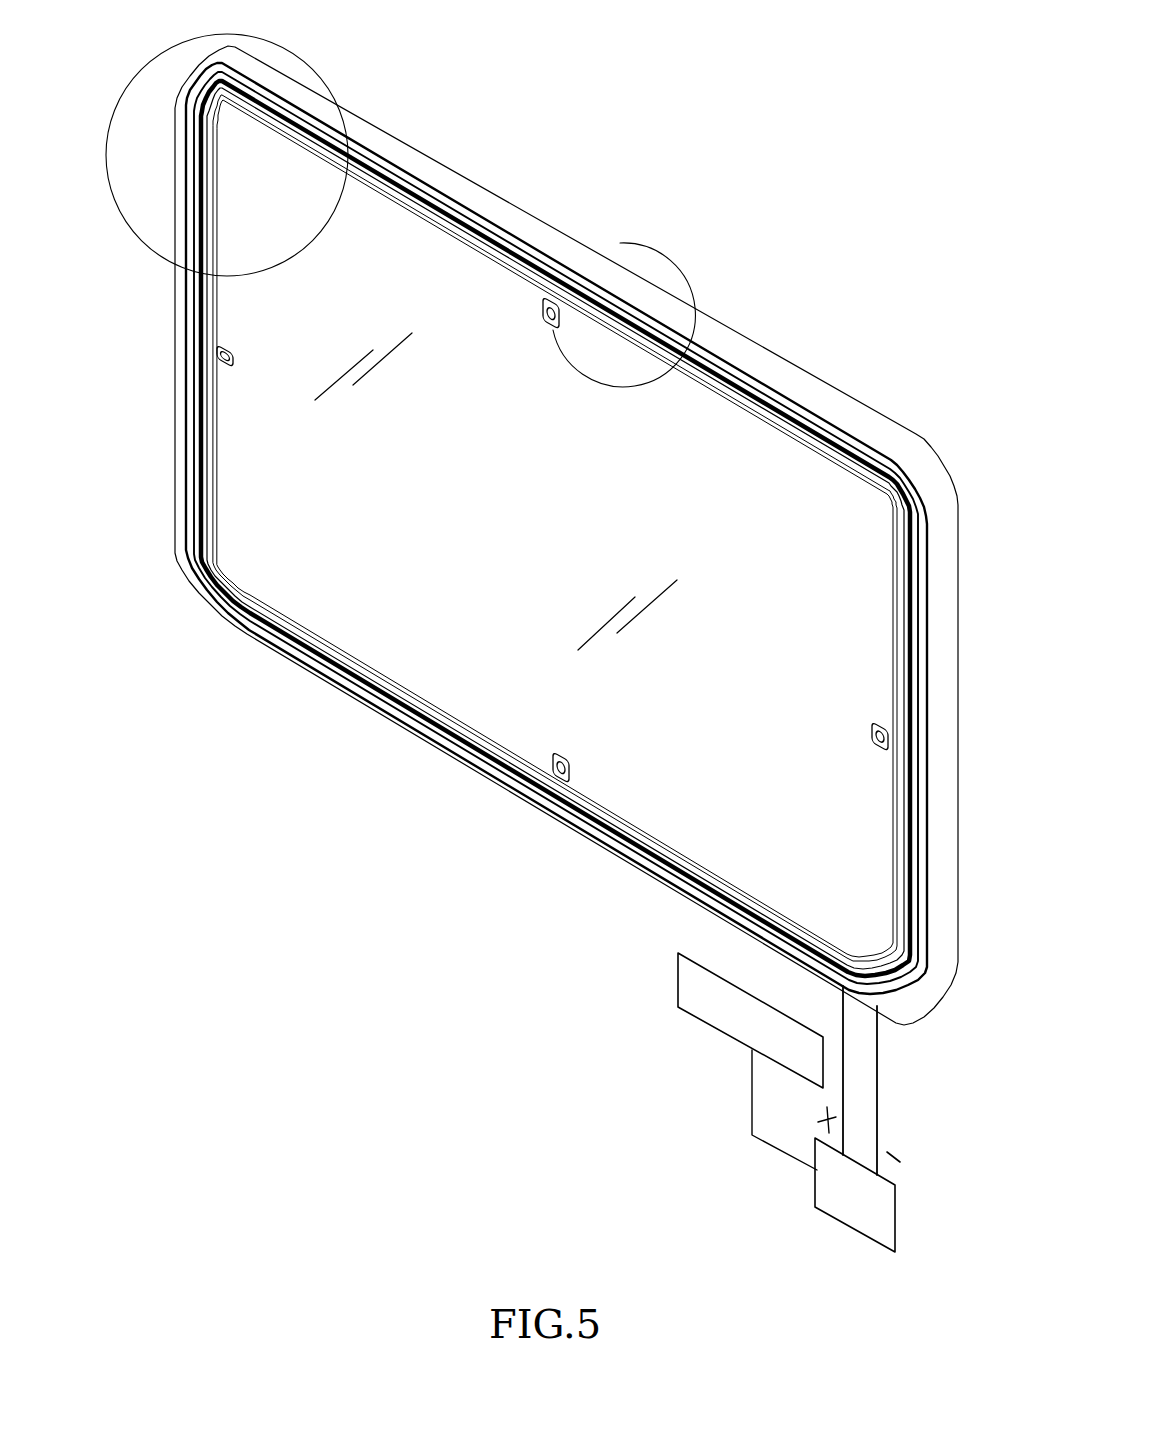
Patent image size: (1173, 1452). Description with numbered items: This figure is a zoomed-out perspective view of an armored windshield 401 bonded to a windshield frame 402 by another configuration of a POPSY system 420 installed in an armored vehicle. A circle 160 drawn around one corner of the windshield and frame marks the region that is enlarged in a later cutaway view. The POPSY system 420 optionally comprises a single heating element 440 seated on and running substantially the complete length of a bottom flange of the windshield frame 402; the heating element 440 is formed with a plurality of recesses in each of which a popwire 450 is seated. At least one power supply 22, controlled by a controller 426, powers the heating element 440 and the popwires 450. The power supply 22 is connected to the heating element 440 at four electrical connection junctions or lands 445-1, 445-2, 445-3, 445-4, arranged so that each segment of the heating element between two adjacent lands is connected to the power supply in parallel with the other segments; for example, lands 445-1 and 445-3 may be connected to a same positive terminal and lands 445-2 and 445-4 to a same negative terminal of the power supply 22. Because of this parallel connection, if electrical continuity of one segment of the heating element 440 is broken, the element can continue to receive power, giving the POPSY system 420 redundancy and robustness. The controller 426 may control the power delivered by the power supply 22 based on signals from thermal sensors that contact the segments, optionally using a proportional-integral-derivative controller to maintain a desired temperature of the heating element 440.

The circle 160 is at (300, 58).
The POPSY system 420 is at (575, 37).
The windshield frame 402 is at (407, 162).
The popwire 450 is at (652, 287).
The electrical connection junction or land 445-3 is at (679, 358).
The electrical connection junction or land 445-2 is at (224, 366).
The electrical connection junction or land 445-1 is at (550, 757).
The electrical connection junction or land 445-4 is at (878, 755).
The heating element 440 is at (198, 378).
The armored windshield 401 is at (570, 523).
The controller 426 is at (678, 978).
The power supply 22 is at (815, 1187).